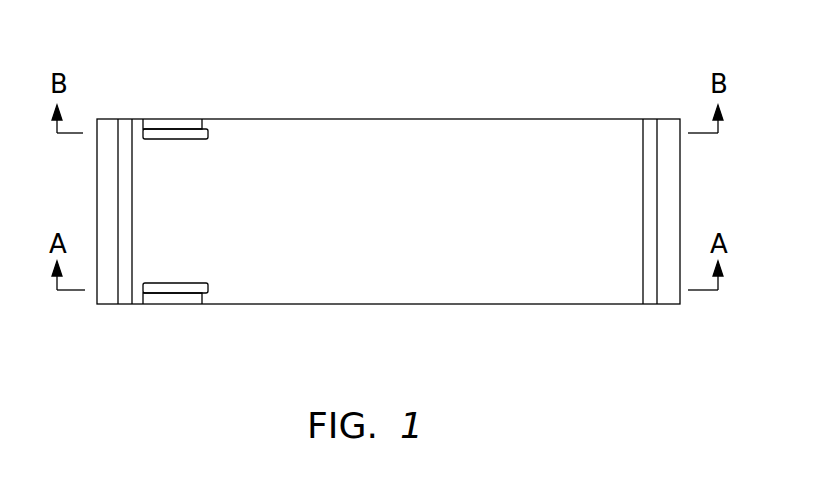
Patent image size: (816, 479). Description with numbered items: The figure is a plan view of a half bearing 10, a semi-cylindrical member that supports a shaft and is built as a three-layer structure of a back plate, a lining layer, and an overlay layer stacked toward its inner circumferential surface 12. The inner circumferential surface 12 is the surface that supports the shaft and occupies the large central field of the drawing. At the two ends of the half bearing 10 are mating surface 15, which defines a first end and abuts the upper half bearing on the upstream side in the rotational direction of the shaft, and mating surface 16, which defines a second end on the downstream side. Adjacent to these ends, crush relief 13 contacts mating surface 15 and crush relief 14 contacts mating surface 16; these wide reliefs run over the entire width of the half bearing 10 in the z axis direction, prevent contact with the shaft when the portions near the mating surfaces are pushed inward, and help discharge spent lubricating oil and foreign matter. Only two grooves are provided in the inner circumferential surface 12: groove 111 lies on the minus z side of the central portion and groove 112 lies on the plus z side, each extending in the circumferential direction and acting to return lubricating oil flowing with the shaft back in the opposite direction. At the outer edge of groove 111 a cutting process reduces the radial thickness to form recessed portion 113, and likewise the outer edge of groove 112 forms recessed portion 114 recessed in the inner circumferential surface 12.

The half bearing 10 is at (452, 72).
The inner circumferential surface 12 is at (517, 293).
The crush relief 13 is at (653, 297).
The crush relief 14 is at (125, 305).
The mating surface 15 is at (668, 130).
The mating surface 16 is at (110, 130).
The groove 111 is at (179, 283).
The groove 112 is at (182, 140).
The recessed portion 113 is at (170, 304).
The recessed portion 114 is at (172, 123).